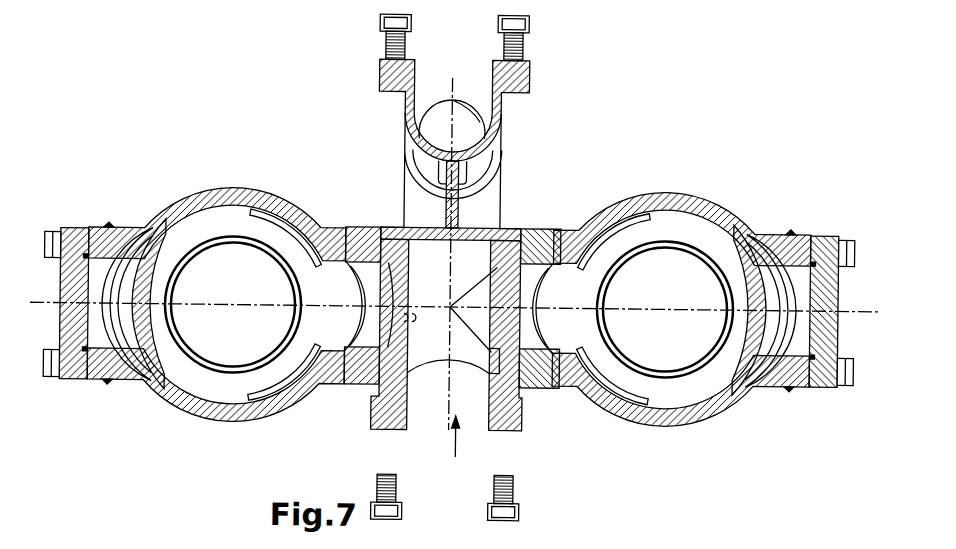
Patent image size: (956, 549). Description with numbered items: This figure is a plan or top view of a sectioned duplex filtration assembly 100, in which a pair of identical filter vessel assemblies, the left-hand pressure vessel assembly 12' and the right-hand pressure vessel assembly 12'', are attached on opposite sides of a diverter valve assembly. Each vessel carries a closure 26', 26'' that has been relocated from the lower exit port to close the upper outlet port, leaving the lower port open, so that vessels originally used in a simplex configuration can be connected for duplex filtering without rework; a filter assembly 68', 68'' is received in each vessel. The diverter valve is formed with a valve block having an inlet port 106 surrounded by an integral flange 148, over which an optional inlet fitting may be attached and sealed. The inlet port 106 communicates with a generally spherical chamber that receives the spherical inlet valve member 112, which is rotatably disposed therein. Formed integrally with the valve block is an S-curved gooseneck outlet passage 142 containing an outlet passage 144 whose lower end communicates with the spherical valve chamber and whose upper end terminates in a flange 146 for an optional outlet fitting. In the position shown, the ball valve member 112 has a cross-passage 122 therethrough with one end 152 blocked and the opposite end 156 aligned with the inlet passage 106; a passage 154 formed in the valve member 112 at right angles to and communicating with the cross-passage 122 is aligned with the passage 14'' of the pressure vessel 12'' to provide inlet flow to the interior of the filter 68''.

The duplex filtration assembly 100 is at (243, 120).
The left-hand pressure vessel assembly 12' is at (226, 319).
The right-hand pressure vessel assembly 12'' is at (676, 328).
The closure 26' is at (64, 276).
The closure 26'' is at (832, 274).
The filter assembly 68' is at (203, 254).
The filter assembly 68'' is at (666, 255).
The cross-passage 122 is at (257, 392).
The passage of the pressure vessel 14'' is at (628, 408).
The passage 154 is at (557, 230).
The spherical inlet valve member 112 is at (380, 227).
The end of cross-passage 152 is at (403, 227).
The opposite end of cross-passage 156 is at (410, 365).
The inlet port 106 is at (500, 405).
The integral flange 148 is at (523, 418).
The flange 146 is at (527, 72).
The gooseneck outlet passage 142 is at (500, 160).
The outlet passage 144 is at (492, 125).